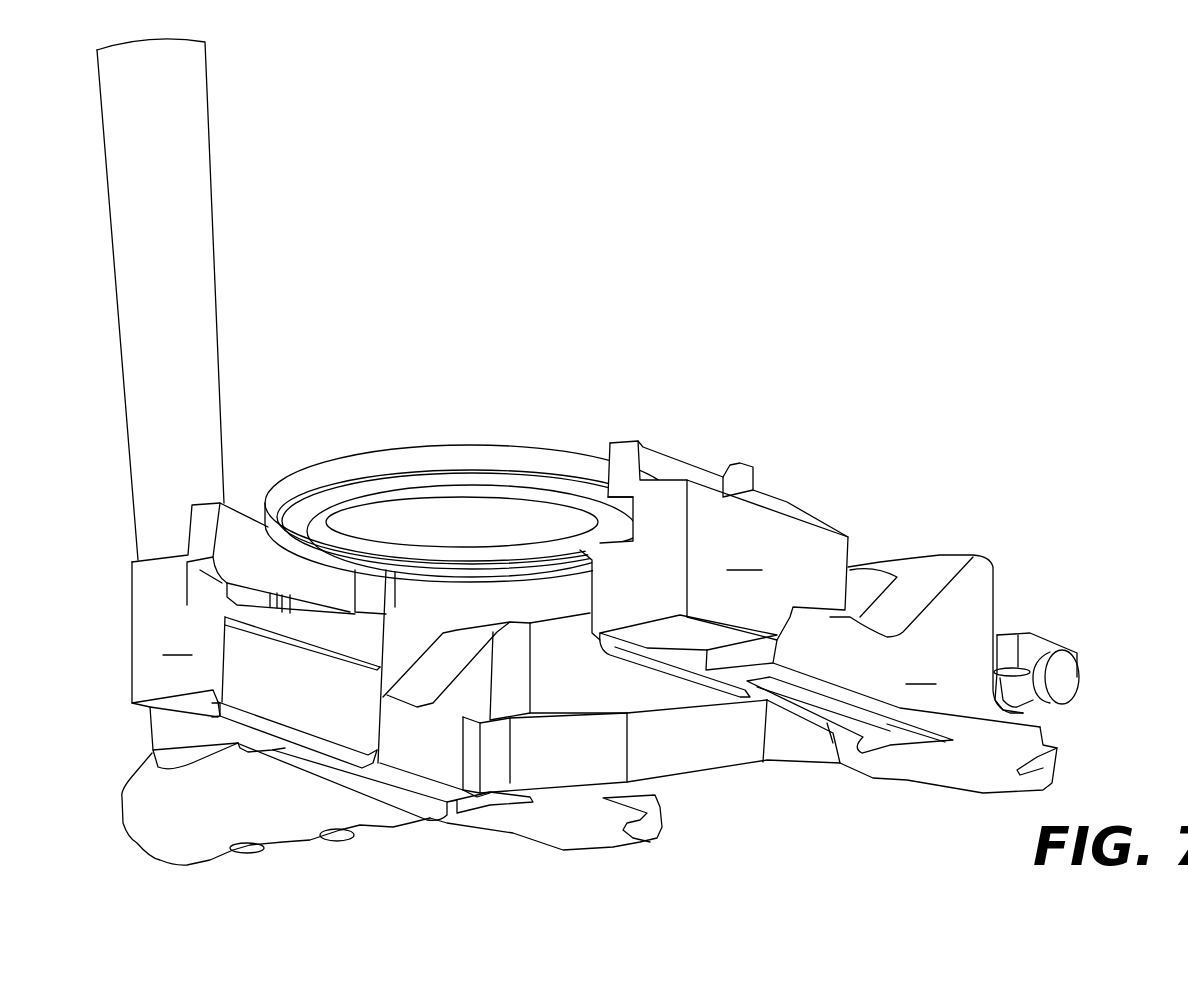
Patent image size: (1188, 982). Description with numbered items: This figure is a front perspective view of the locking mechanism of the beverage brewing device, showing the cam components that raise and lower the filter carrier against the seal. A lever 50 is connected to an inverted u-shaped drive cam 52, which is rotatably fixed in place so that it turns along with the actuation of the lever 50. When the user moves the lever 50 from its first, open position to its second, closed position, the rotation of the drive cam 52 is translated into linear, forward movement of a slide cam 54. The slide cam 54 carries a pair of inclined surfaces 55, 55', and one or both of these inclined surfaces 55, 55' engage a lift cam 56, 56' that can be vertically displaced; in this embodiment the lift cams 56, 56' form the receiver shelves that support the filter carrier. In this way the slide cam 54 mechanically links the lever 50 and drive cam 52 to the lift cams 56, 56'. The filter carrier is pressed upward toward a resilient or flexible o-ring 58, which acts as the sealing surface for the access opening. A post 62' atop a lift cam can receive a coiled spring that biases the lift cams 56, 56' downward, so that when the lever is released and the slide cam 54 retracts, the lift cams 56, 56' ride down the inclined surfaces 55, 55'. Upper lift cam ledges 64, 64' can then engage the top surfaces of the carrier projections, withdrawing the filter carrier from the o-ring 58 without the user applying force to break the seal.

The lever 50 is at (213, 218).
The drive cam 52 is at (1062, 673).
The slide cam 54 is at (589, 762).
The inclined surface 55 is at (505, 653).
The inclined surface 55' is at (906, 592).
The lift cam 56 is at (259, 636).
The lift cam 56' is at (714, 569).
The o-ring 58 is at (370, 467).
The post 62' is at (715, 427).
The upper lift cam ledge 64 is at (131, 600).
The upper lift cam ledge 64' is at (631, 551).